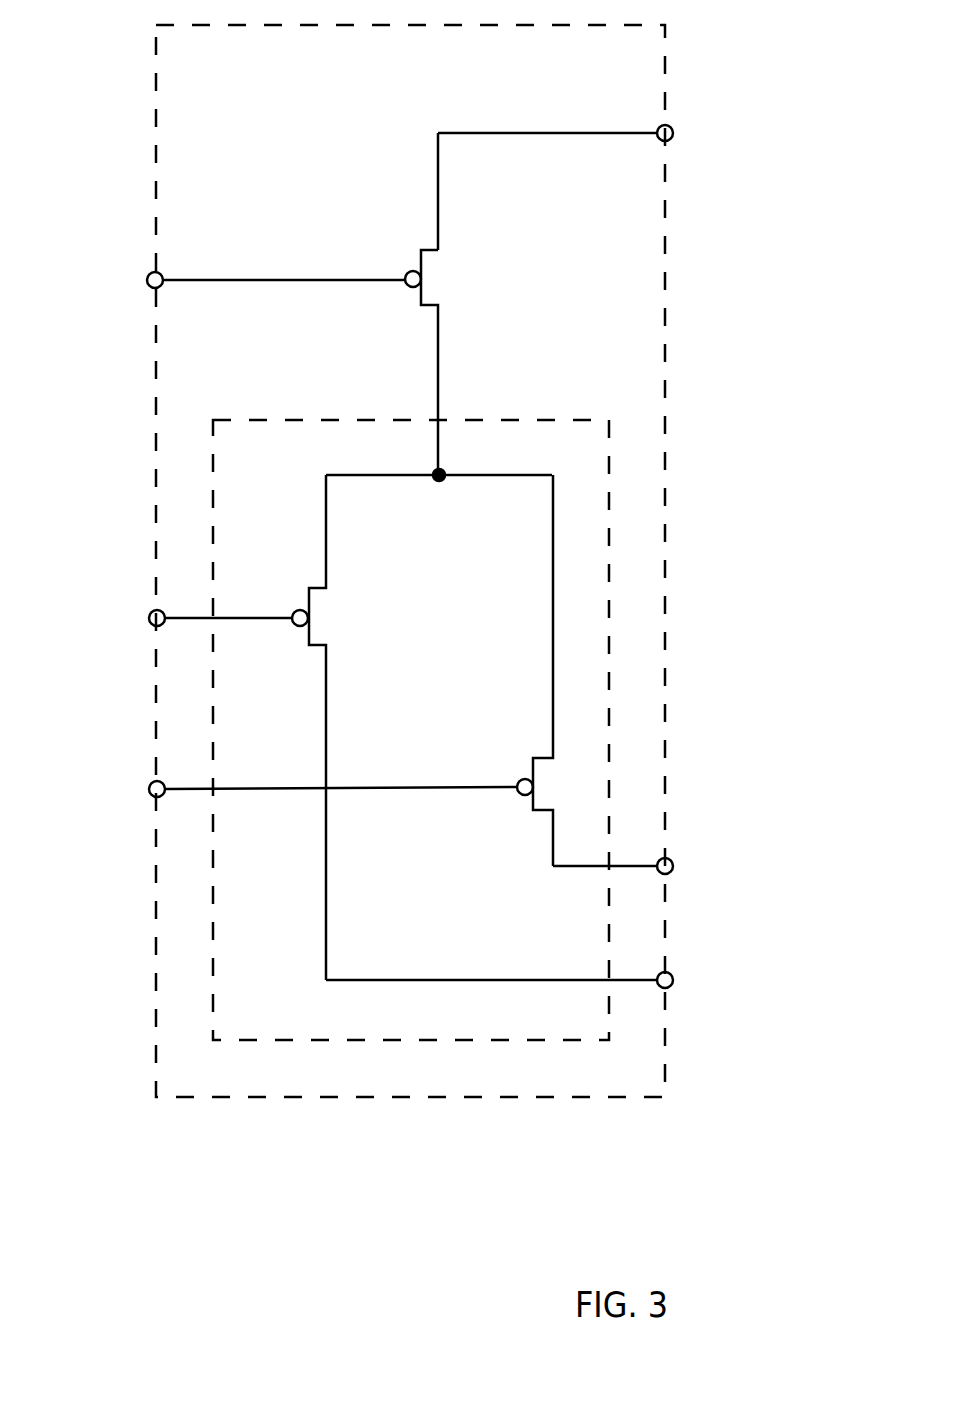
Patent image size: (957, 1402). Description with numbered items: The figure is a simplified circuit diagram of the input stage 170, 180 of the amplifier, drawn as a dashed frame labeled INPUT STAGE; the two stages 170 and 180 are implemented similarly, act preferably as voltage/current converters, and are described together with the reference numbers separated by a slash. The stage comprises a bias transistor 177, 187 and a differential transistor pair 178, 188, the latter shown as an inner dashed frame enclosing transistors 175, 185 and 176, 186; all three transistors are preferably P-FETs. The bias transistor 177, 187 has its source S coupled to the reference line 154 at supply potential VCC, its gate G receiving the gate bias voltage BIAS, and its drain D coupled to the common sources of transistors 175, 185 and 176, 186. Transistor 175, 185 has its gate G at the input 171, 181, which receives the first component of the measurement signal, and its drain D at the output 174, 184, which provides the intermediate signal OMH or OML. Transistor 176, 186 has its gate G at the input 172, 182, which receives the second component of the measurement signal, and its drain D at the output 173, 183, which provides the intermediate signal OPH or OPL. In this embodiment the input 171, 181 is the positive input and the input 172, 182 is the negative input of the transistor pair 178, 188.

The input stage 170 is at (410, 561).
The input stage 180 is at (650, 56).
The reference line 154 is at (672, 127).
The bias transistor 177 is at (292, 342).
The bias transistor 187 is at (418, 251).
The differential transistor pair 178 is at (411, 730).
The differential transistor pair 188 is at (592, 449).
The transistor 175 is at (275, 727).
The transistor 185 is at (308, 598).
The input 171 is at (167, 609).
The input 181 is at (151, 616).
The input 172 is at (278, 779).
The input 182 is at (151, 784).
The transistor 176 is at (489, 670).
The transistor 186 is at (532, 768).
The output 173 is at (680, 867).
The output 183 is at (672, 860).
The output 174 is at (571, 979).
The output 184 is at (672, 974).